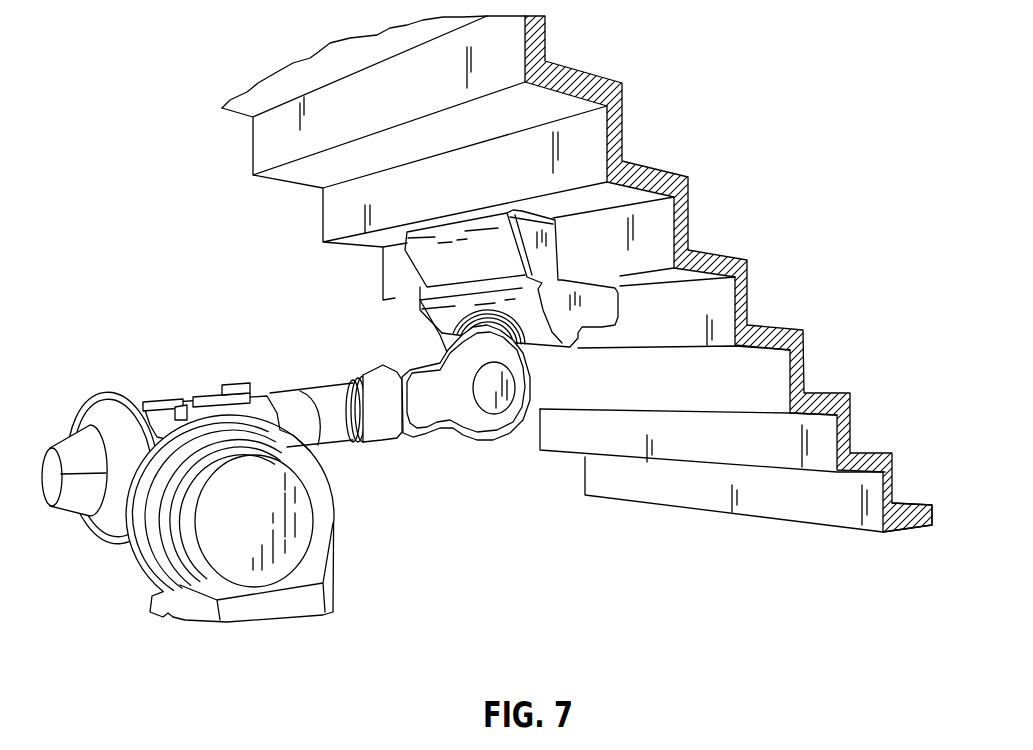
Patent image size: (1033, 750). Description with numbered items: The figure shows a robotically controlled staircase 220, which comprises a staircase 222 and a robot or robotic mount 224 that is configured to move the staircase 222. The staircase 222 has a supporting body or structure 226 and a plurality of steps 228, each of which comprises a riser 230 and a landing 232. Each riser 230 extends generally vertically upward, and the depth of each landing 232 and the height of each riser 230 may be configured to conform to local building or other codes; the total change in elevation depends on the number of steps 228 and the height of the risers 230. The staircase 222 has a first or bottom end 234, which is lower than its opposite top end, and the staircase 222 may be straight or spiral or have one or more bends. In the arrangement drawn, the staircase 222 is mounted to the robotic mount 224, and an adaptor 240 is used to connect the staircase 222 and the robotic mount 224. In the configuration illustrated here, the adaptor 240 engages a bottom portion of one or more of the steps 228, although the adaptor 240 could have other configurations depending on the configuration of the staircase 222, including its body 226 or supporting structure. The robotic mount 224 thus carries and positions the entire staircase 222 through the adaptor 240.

The robotically controlled staircase 220 is at (460, 523).
The staircase 222 is at (681, 109).
The robot or robotic mount 224 is at (194, 356).
The supporting body or structure 226 is at (712, 525).
The steps 228 is at (754, 290).
The riser 230 is at (804, 364).
The landing 232 is at (788, 322).
The bottom end 234 is at (940, 504).
The adaptor 240 is at (425, 263).